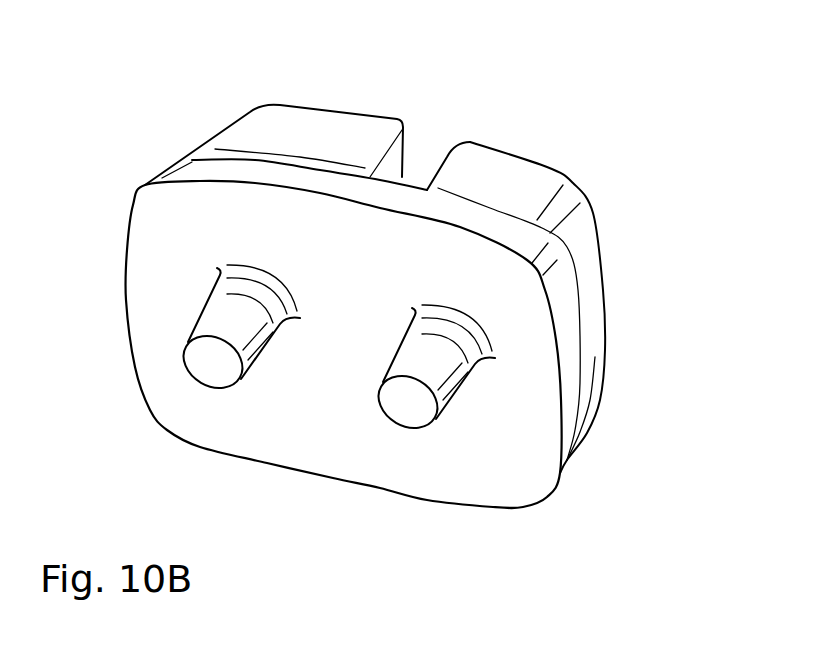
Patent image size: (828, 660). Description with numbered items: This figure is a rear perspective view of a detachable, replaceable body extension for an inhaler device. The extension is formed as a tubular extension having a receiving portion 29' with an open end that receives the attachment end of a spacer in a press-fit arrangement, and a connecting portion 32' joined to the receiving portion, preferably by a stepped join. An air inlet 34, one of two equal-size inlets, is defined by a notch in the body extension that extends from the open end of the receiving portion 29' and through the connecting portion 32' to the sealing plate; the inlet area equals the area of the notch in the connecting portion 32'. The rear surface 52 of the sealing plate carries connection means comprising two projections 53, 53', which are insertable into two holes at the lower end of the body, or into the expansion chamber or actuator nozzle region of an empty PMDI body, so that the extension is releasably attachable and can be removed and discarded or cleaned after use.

The rear surface 52 is at (167, 272).
The connecting portion 32' is at (281, 121).
The air inlet 34 is at (410, 182).
The receiving portion 29' is at (567, 292).
The projection 53 is at (216, 392).
The projection 53' is at (411, 439).